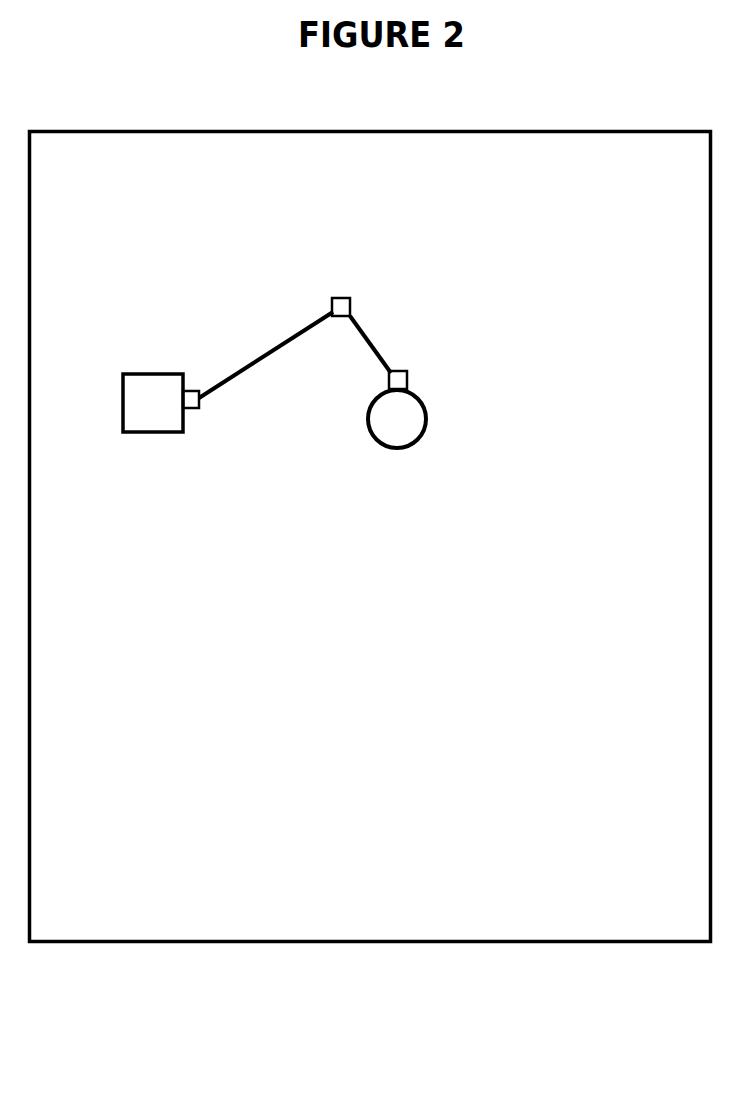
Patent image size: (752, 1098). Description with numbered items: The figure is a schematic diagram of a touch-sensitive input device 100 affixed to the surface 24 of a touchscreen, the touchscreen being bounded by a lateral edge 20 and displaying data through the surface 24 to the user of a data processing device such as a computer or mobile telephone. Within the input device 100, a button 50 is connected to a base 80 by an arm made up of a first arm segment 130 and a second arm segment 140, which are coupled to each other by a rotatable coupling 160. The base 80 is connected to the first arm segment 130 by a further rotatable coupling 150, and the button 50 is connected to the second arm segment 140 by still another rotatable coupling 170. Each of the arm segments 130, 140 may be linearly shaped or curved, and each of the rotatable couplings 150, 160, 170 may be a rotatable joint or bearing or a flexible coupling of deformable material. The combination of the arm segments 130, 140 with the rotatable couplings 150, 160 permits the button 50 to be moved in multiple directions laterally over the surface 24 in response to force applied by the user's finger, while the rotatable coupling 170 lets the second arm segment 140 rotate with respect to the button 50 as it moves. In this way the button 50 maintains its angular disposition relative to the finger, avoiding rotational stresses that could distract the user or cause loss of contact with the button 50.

The lateral edge of a touchscreen 20 is at (119, 941).
The surface 24 is at (223, 680).
The button 50 is at (422, 432).
The base 80 is at (130, 432).
The touch-sensitive input device 100 is at (350, 583).
The first arm segment 130 is at (258, 355).
The second arm segment 140 is at (368, 353).
The rotatable coupling 150 is at (201, 409).
The rotatable coupling 160 is at (350, 298).
The rotatable coupling 170 is at (407, 373).